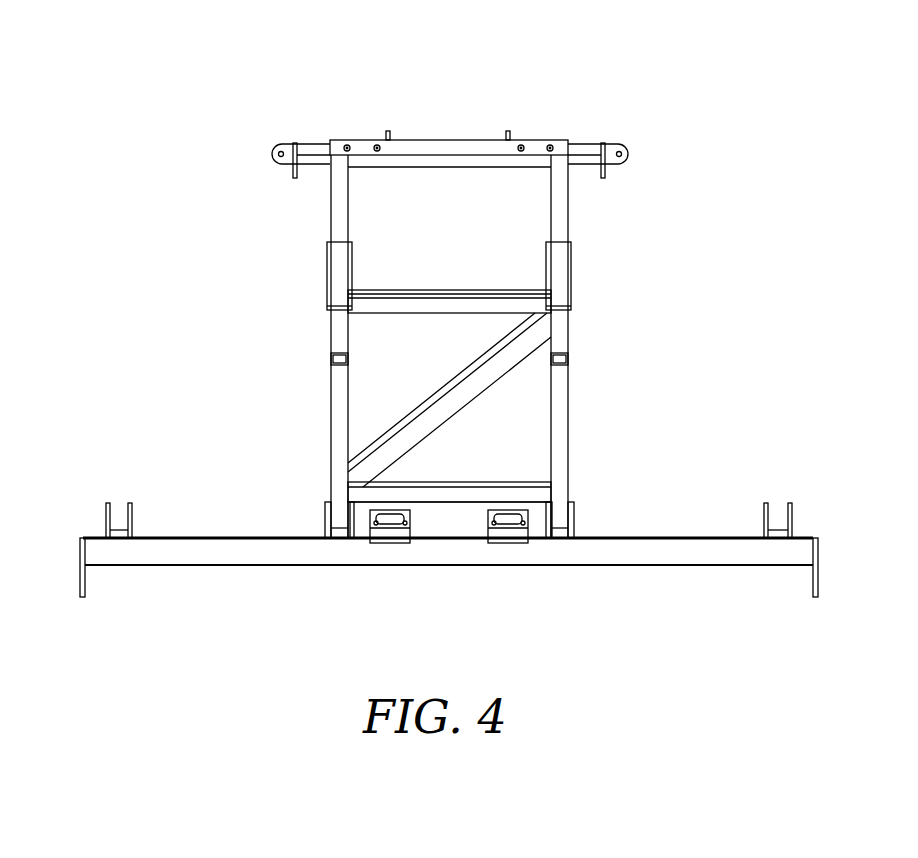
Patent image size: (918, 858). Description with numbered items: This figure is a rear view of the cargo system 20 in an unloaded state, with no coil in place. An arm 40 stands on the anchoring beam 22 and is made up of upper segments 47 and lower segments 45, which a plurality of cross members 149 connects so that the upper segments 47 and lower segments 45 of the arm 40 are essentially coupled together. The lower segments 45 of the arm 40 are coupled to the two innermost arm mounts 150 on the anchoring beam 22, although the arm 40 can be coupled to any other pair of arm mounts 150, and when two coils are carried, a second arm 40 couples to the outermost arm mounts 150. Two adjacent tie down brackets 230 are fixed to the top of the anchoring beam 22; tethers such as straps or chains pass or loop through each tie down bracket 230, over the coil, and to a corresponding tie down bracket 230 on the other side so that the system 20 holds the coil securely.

The system 20 is at (692, 76).
The arm 40 is at (233, 160).
The anchoring beam 22 is at (677, 538).
The lower segment 45 is at (337, 412).
The upper segment 47 is at (332, 215).
The cross member 149 is at (452, 140).
The arm mount 150 is at (106, 515).
The tie down bracket 230 is at (390, 543).